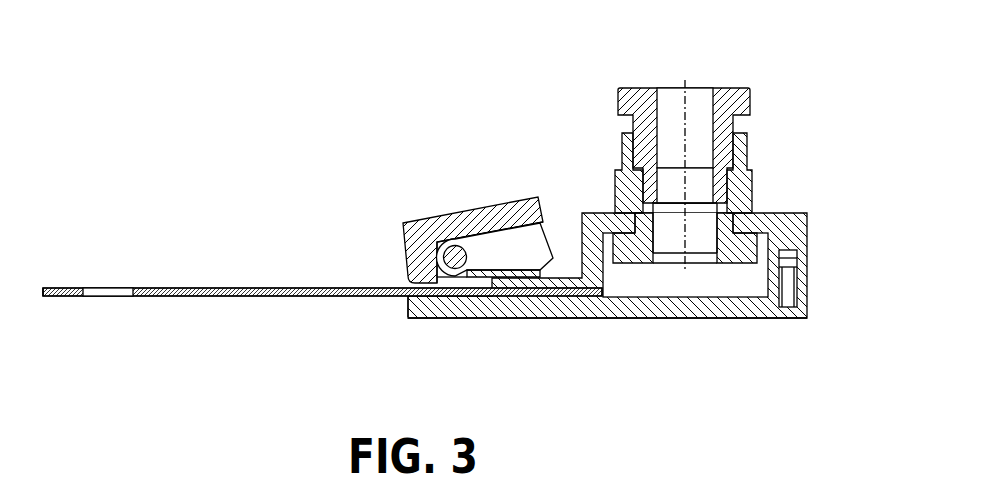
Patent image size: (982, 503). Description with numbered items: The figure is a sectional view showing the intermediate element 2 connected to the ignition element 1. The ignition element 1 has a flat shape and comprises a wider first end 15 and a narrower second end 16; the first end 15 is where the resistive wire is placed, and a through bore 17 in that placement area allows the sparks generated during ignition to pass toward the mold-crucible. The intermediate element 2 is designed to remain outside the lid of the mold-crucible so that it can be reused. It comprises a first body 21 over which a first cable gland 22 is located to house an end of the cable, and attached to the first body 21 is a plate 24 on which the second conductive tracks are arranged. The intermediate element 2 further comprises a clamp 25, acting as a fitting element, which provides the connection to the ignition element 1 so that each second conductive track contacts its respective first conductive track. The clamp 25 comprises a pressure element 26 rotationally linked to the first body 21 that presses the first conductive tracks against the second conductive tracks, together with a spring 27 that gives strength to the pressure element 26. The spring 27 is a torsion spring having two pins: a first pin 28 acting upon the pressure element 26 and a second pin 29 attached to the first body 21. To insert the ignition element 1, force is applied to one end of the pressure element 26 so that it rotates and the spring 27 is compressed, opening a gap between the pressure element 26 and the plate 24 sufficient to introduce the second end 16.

The ignition element 1 is at (305, 284).
The intermediate element 2 is at (597, 103).
The first end 15 is at (73, 282).
The second end 16 is at (402, 302).
The through bore 17 is at (105, 298).
The first body 21 is at (791, 222).
The first cable gland 22 is at (727, 92).
The plate 24 is at (630, 313).
The clamp 25 is at (475, 193).
The pressure element 26 is at (507, 210).
The spring 27 is at (443, 243).
The first pin 28 is at (540, 210).
The second pin 29 is at (537, 272).